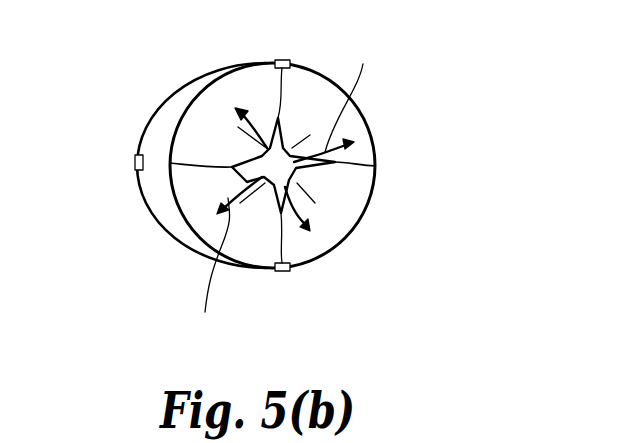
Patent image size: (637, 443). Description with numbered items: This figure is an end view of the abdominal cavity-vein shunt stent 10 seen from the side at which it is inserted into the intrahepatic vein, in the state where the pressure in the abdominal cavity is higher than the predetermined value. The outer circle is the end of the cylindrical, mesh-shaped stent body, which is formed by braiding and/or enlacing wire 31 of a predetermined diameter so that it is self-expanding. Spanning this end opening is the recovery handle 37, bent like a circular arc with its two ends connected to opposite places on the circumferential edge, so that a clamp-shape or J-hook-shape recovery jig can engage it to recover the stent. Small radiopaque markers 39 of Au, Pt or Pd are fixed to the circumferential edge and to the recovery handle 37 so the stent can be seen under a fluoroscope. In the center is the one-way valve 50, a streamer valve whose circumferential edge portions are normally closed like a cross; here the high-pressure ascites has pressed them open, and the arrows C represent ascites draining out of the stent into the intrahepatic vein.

The abdominal cavity-vein shunt stent 10 is at (373, 113).
The wire 31 is at (347, 240).
The recovery handle 37 is at (157, 227).
The markers 39 is at (282, 60).
The one-way valve 50 is at (297, 170).
The arrows C is at (286, 194).